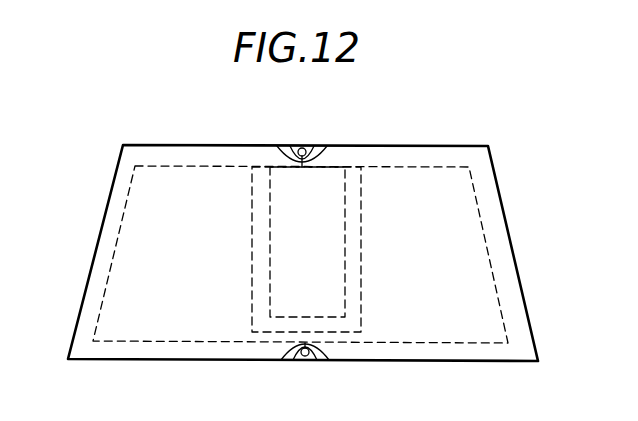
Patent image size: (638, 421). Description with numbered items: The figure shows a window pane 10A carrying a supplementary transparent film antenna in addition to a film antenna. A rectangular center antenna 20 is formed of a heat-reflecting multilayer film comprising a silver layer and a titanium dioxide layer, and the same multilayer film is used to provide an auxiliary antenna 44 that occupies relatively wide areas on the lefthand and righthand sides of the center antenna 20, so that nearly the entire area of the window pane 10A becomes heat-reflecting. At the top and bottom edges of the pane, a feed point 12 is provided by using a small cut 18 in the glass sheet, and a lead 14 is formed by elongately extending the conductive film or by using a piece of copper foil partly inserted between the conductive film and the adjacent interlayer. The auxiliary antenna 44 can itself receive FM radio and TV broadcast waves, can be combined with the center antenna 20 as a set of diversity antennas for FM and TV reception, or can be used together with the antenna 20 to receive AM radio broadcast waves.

The window pane 10A is at (497, 168).
The feed point 12 is at (300, 147).
The lead 14 is at (306, 161).
The small cut 18 is at (283, 150).
The rectangular center antenna 20 is at (332, 228).
The auxiliary antenna 44 is at (210, 330).